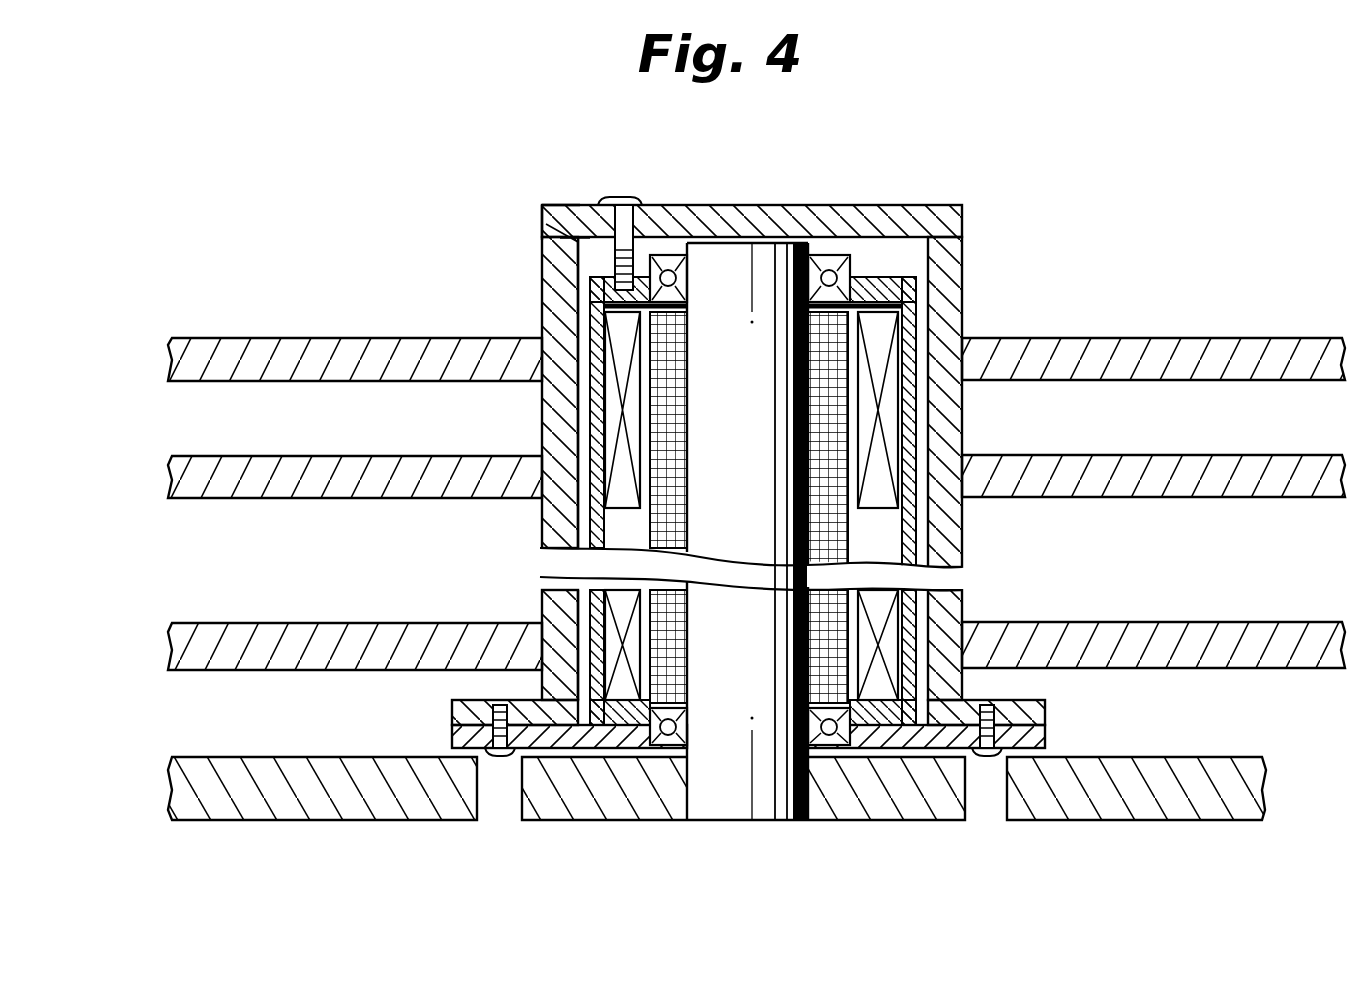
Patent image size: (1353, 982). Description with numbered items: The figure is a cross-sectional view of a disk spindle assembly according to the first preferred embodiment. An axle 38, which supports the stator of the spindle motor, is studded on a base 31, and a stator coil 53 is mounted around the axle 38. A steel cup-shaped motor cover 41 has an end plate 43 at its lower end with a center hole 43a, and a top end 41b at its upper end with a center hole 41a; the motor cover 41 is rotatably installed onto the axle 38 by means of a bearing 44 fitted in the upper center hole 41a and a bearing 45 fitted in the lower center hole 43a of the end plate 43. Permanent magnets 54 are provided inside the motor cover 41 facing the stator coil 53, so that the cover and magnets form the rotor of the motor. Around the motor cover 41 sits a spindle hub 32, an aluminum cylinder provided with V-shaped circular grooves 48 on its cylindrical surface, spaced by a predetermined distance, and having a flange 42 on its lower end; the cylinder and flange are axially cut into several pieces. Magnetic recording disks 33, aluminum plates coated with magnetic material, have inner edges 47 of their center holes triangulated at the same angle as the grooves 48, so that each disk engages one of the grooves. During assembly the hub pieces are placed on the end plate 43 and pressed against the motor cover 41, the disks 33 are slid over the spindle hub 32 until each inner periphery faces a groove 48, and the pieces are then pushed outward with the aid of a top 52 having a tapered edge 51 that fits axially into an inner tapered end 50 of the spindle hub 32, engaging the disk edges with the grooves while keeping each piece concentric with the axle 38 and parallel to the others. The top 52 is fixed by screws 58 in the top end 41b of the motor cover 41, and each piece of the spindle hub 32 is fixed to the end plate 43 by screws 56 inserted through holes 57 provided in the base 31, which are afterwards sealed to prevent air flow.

The base 31 is at (1262, 792).
The spindle hub 32 is at (950, 252).
The magnetic recording disks 33 is at (1212, 350).
The axle 38 is at (735, 822).
The motor cover 41 is at (910, 292).
The center hole 41a is at (868, 275).
The top end 41b is at (594, 275).
The flange 42 is at (1046, 712).
The end plate 43 is at (1048, 742).
The center hole 43a is at (863, 750).
The bearing 44 is at (840, 265).
The bearing 45 is at (822, 748).
The inner edges 47 is at (545, 352).
The circular grooves 48 is at (542, 302).
The inner tapered end 50 is at (603, 277).
The tapered edge 51 is at (553, 215).
The top 52 is at (540, 212).
The stator coil 53 is at (620, 704).
The permanent magnets 54 is at (640, 692).
The screws 56 is at (500, 756).
The holes 57 is at (518, 805).
The screws 58 is at (636, 202).